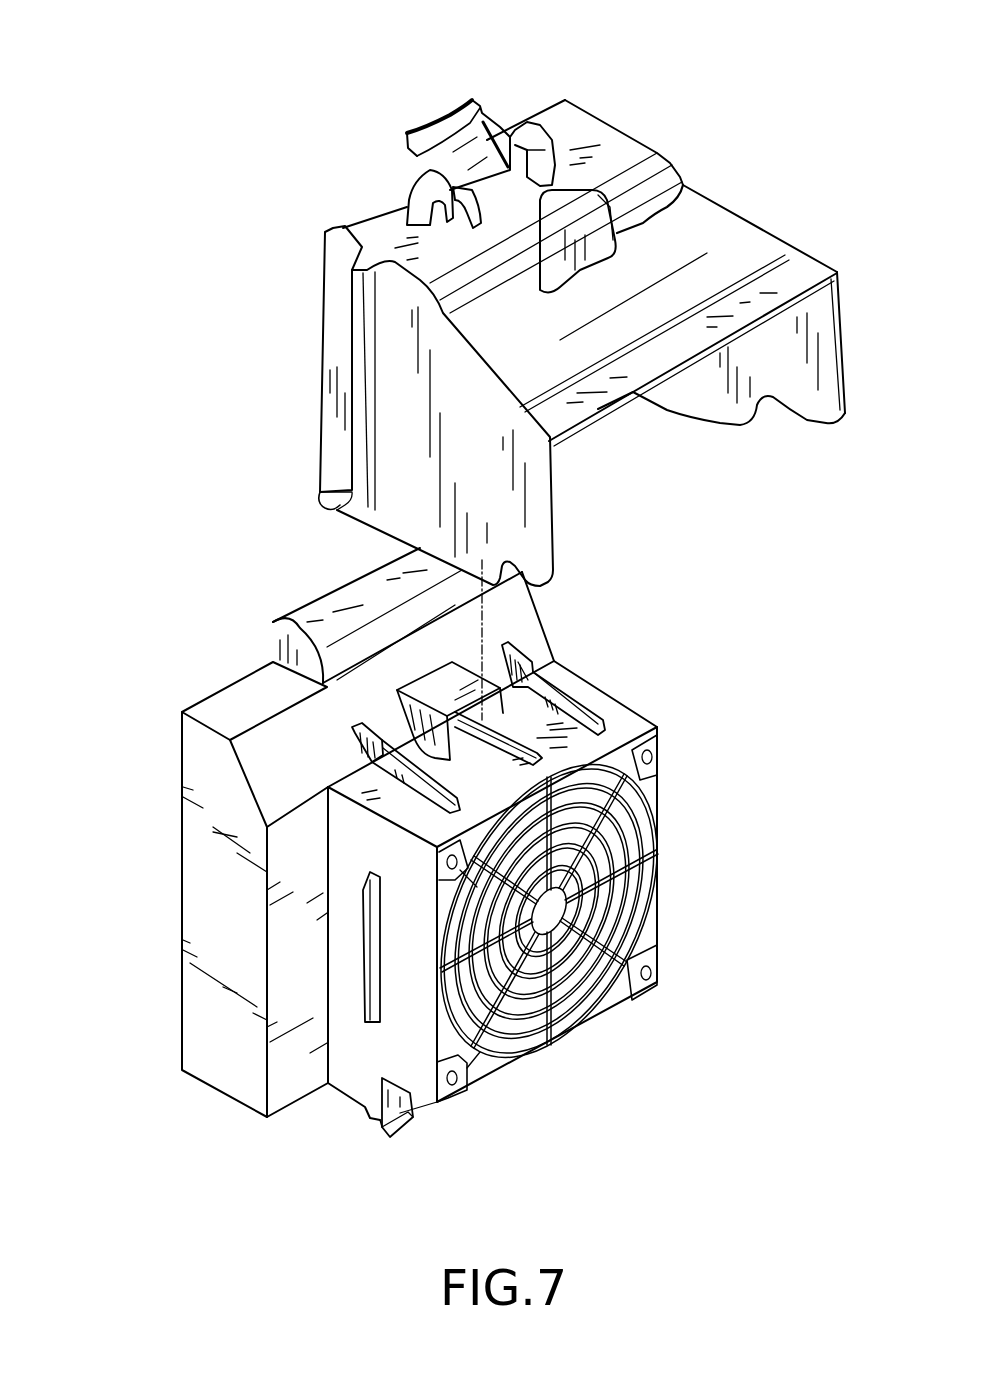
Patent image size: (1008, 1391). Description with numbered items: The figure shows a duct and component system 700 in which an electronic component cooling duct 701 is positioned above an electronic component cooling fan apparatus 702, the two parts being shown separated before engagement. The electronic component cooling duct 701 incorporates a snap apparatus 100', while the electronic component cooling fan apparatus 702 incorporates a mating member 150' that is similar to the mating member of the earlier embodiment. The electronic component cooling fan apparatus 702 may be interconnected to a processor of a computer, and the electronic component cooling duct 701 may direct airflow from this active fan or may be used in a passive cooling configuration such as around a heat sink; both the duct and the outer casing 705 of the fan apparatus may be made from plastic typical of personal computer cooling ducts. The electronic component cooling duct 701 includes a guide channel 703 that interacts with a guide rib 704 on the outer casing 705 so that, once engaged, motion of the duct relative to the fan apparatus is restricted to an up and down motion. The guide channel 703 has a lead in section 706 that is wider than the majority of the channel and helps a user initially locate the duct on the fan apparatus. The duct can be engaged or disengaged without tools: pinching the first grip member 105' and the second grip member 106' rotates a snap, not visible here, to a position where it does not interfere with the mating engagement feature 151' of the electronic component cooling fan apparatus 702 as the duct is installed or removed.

The snap apparatus 100' is at (476, 590).
The first grip member 105' is at (481, 132).
The second grip member 106' is at (646, 218).
The mating member 150' is at (389, 864).
The mating engagement feature 151' is at (536, 727).
The duct and component system 700 is at (218, 270).
The electronic component cooling duct 701 is at (773, 200).
The electronic component cooling fan apparatus 702 is at (158, 1032).
The guide channel 703 is at (352, 450).
The guide rib 704 is at (363, 1003).
The outer casing 705 is at (182, 752).
The lead in section 706 is at (340, 492).